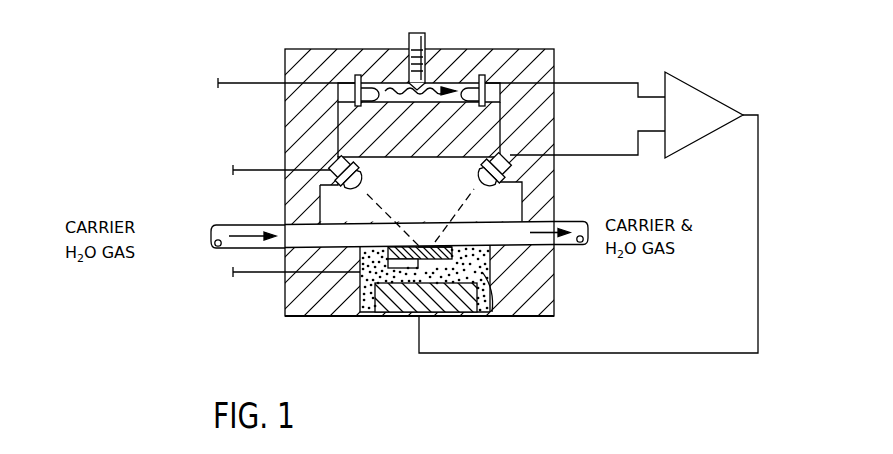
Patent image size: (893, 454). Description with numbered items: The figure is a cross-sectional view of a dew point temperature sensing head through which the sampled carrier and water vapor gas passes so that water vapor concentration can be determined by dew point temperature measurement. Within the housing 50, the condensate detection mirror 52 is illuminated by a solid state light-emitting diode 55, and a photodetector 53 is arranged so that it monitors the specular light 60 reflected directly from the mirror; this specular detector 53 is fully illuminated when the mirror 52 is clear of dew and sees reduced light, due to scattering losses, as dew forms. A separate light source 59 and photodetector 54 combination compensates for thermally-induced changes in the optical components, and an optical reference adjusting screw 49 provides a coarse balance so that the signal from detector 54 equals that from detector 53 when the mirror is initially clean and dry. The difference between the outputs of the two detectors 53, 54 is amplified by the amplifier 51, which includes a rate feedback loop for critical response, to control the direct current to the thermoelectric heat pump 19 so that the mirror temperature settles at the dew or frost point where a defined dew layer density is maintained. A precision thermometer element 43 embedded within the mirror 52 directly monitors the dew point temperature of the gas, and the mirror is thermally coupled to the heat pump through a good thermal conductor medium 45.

The thermoelectric heat pump 19 is at (398, 308).
The precision thermometer element 43 is at (417, 262).
The thermal conductor medium 45 is at (497, 308).
The optical reference adjusting screw 49 is at (427, 42).
The housing 50 is at (556, 199).
The amplifier 51 is at (690, 83).
The condensate detection mirror 52 is at (448, 246).
The photodetector 53 is at (472, 183).
The photodetector 54 is at (470, 92).
The light-emitting diode 55 is at (366, 183).
The light source 59 is at (367, 92).
The specular light 60 is at (447, 215).